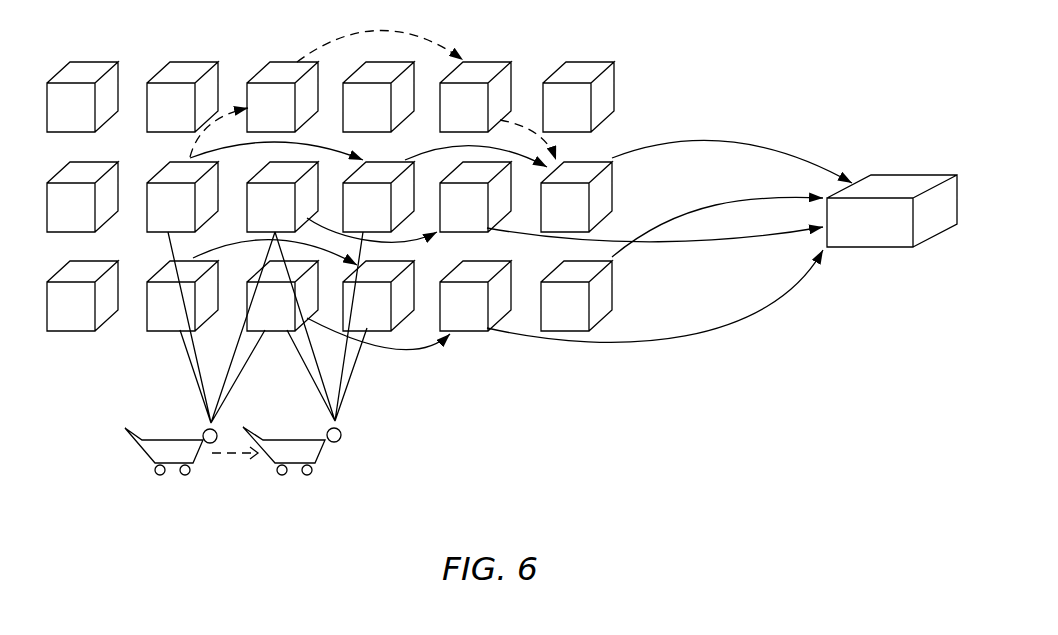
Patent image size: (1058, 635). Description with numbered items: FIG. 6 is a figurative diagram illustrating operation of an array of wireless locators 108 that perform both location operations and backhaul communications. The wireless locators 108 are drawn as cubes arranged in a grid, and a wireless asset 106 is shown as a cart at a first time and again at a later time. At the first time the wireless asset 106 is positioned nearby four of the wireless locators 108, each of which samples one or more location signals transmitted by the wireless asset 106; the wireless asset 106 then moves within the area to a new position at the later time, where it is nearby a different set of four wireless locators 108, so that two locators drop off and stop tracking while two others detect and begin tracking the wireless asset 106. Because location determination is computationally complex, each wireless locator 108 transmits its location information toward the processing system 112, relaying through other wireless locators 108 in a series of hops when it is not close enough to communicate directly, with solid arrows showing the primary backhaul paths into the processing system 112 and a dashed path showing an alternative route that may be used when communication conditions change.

The wireless asset 106 is at (150, 454).
The wireless locator 108 is at (700, 83).
The processing system 112 is at (892, 250).